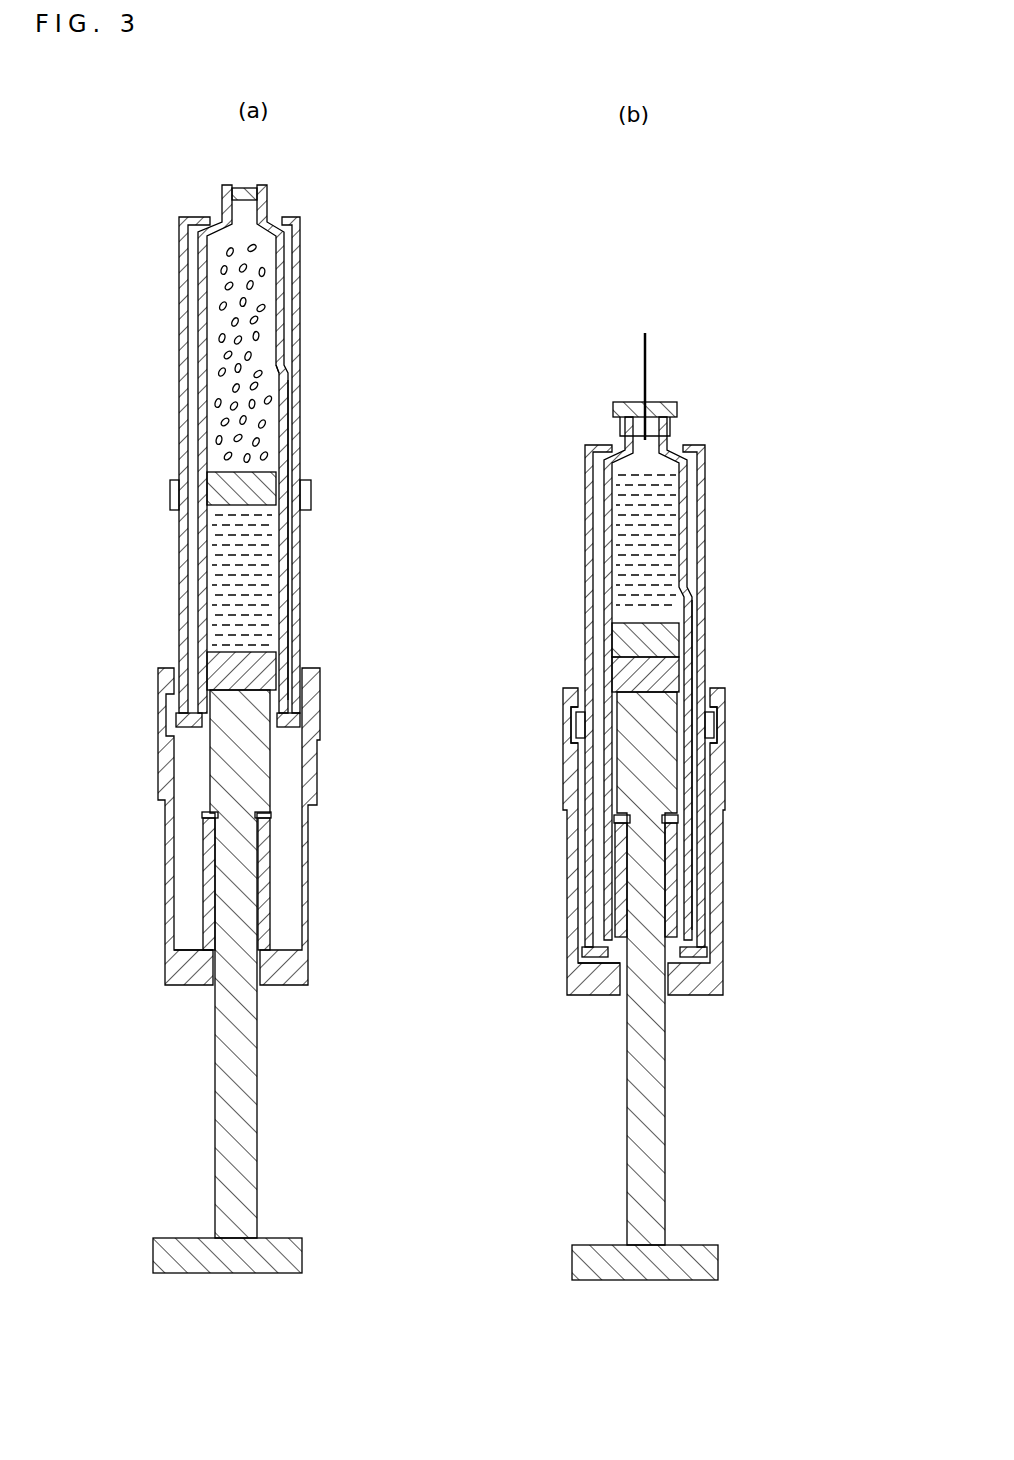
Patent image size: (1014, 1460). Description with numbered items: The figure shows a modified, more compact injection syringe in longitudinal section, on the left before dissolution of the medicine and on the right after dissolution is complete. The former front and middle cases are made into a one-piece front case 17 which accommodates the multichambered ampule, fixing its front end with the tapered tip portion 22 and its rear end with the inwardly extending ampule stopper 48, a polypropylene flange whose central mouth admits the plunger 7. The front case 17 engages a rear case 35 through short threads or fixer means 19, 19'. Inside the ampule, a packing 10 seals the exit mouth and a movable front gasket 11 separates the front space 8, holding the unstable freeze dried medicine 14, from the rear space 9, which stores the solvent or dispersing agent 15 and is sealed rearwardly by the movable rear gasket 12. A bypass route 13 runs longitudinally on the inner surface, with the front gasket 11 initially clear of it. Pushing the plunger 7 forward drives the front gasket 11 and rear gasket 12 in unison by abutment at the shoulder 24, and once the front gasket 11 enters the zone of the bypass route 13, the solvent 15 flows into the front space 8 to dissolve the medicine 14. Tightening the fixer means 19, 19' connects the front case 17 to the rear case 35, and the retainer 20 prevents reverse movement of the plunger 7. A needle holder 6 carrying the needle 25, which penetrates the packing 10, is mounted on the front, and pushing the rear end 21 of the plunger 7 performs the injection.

The needle holder 6 is at (678, 412).
The plunger 7 is at (251, 1098).
The front space 8 is at (262, 297).
The rear space 9 is at (263, 618).
The packing 10 is at (245, 190).
The front gasket 11 is at (217, 485).
The rear gasket 12 is at (217, 670).
The bypass route 13 is at (288, 405).
The unstable freeze dried medicine 14 is at (276, 417).
The solvent or dispersing agent 15 is at (263, 568).
The front case 17 is at (299, 540).
The short thread or fixer means 19 is at (385, 609).
The short thread or fixer means 19' is at (581, 729).
The retainer 20 is at (203, 917).
The rear end 21 is at (303, 1262).
The tapered tip portion 22 is at (184, 216).
The shoulder 24 is at (211, 808).
The needle 25 is at (648, 362).
The rear case 35 is at (311, 872).
The ampule stopper 48 is at (176, 726).